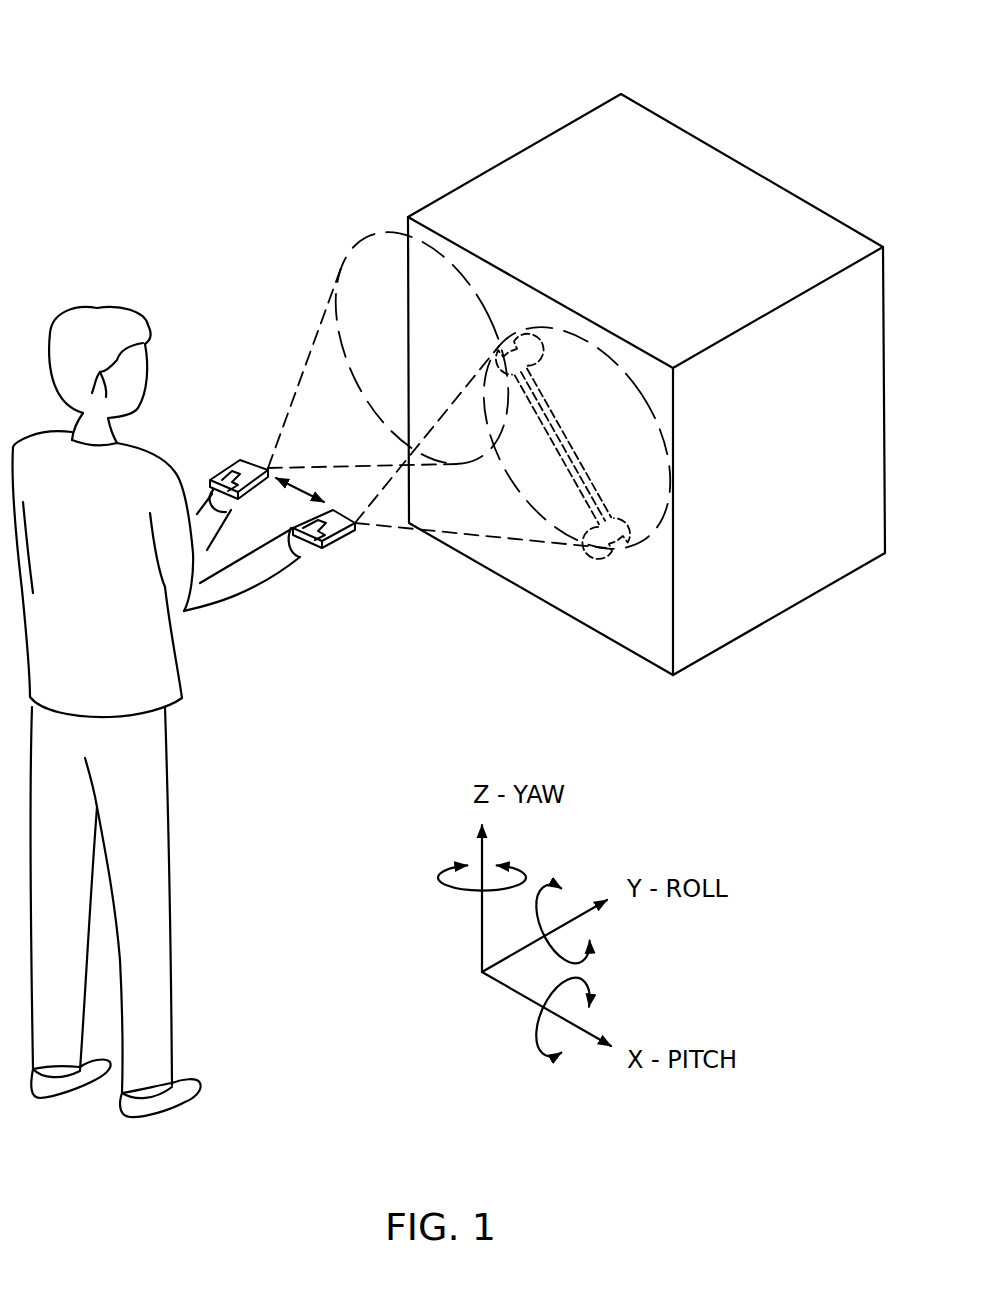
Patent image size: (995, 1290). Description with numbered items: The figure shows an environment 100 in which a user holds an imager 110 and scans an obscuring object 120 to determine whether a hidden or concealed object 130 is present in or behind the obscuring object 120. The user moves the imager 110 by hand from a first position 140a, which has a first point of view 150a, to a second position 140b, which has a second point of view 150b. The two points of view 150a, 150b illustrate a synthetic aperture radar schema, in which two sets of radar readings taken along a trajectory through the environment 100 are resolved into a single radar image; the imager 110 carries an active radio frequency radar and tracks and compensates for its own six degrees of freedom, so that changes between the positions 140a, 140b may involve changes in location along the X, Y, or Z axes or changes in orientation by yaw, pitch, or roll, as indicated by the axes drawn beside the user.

The environment 100 is at (170, 31).
The imager 110 is at (220, 472).
The obscuring object 120 is at (720, 147).
The hidden/concealed object 130 is at (555, 417).
The first position 140a is at (245, 452).
The second position 140b is at (374, 544).
The first point of view 150a is at (433, 247).
The second point of view 150b is at (577, 337).